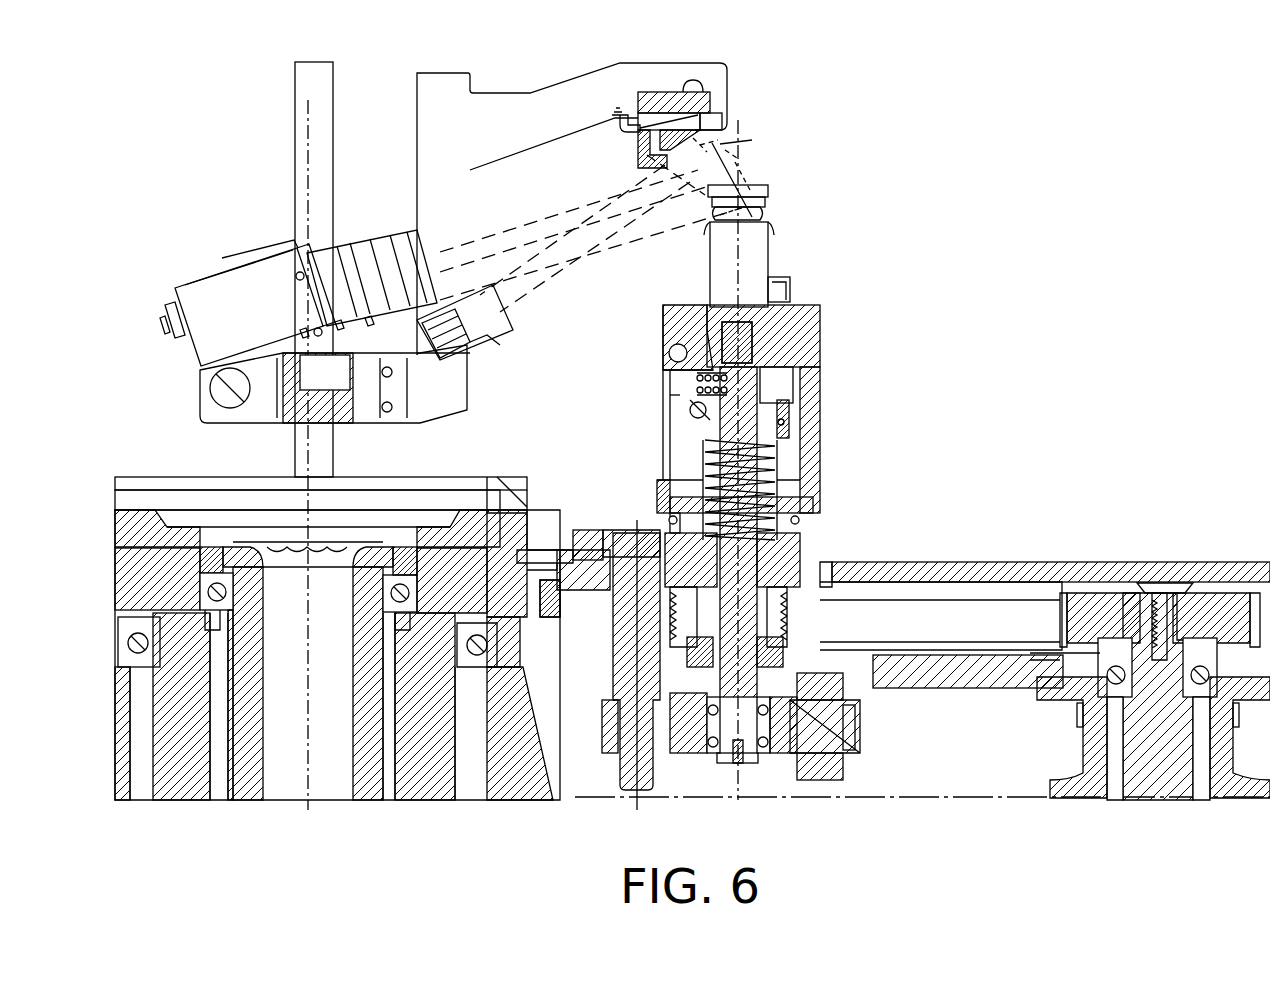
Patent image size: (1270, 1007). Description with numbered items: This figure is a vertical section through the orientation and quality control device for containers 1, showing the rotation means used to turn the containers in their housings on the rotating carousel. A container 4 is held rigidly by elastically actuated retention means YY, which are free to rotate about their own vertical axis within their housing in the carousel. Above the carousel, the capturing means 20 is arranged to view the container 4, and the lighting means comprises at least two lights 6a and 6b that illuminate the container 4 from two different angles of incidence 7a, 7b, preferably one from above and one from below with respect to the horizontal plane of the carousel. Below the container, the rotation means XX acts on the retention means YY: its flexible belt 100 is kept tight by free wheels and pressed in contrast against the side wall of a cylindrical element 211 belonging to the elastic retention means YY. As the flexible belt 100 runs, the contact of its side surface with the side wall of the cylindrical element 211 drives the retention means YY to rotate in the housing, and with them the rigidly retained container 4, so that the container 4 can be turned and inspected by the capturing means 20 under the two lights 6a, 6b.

The orientation and quality control device for containers 1 is at (988, 180).
The capturing means 20 is at (378, 208).
The angle of incidence 7b is at (538, 293).
The light 6a is at (650, 155).
The angle of incidence 7a is at (657, 170).
The container 4 is at (765, 246).
The elastically actuated retention means YY is at (802, 288).
The light 6b is at (487, 338).
The cylindrical element 211 is at (827, 562).
The flexible belt 100 is at (972, 612).
The rotation means XX is at (1050, 728).